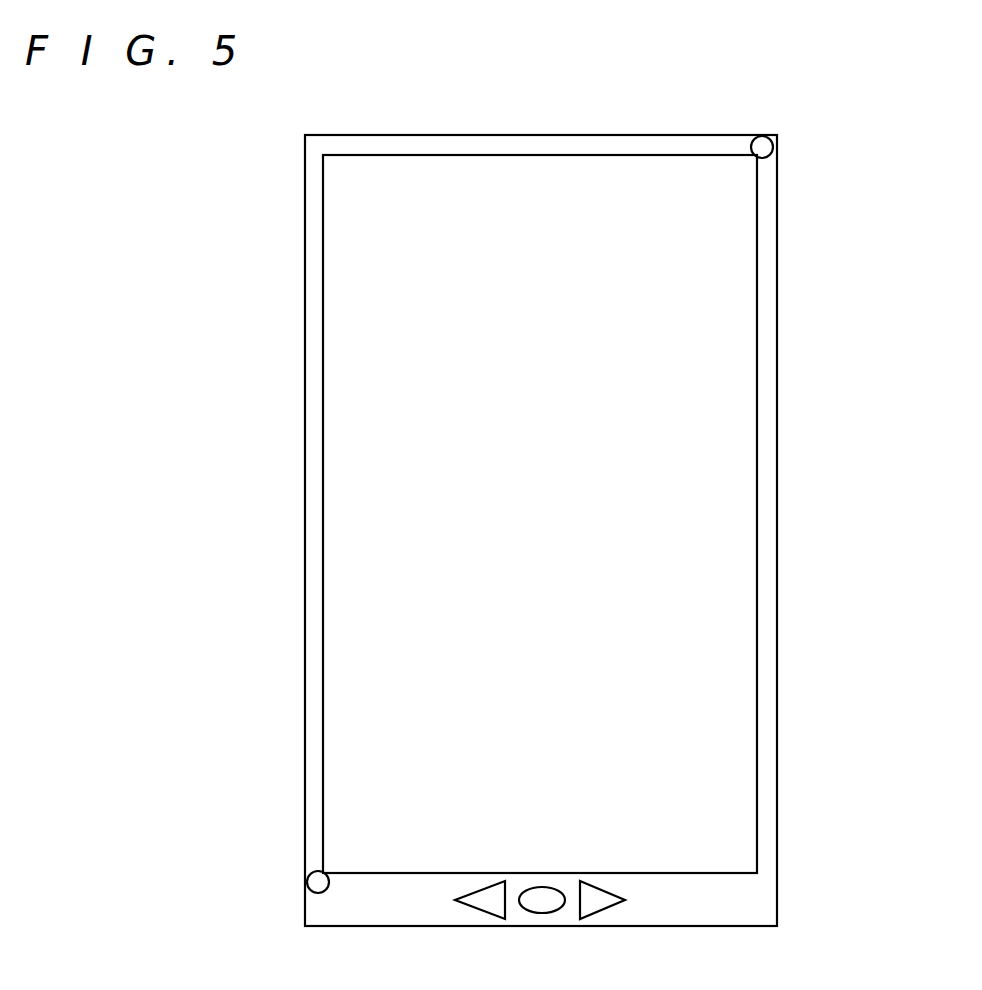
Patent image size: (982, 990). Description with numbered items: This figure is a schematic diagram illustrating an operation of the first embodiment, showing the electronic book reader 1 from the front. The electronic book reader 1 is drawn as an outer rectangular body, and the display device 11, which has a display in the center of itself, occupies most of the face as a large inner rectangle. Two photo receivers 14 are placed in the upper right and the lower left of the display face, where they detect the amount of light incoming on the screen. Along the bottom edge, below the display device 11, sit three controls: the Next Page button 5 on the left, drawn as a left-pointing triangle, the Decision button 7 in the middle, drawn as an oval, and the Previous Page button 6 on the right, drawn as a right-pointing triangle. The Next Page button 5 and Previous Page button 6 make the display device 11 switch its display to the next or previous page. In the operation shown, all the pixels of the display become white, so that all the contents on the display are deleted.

The electronic book reader 1 is at (808, 382).
The display device 11 is at (738, 823).
The photo receivers 14 is at (765, 147).
The Next Page button 5 is at (492, 900).
The Decision button 7 is at (542, 900).
The Previous Page button 6 is at (595, 900).